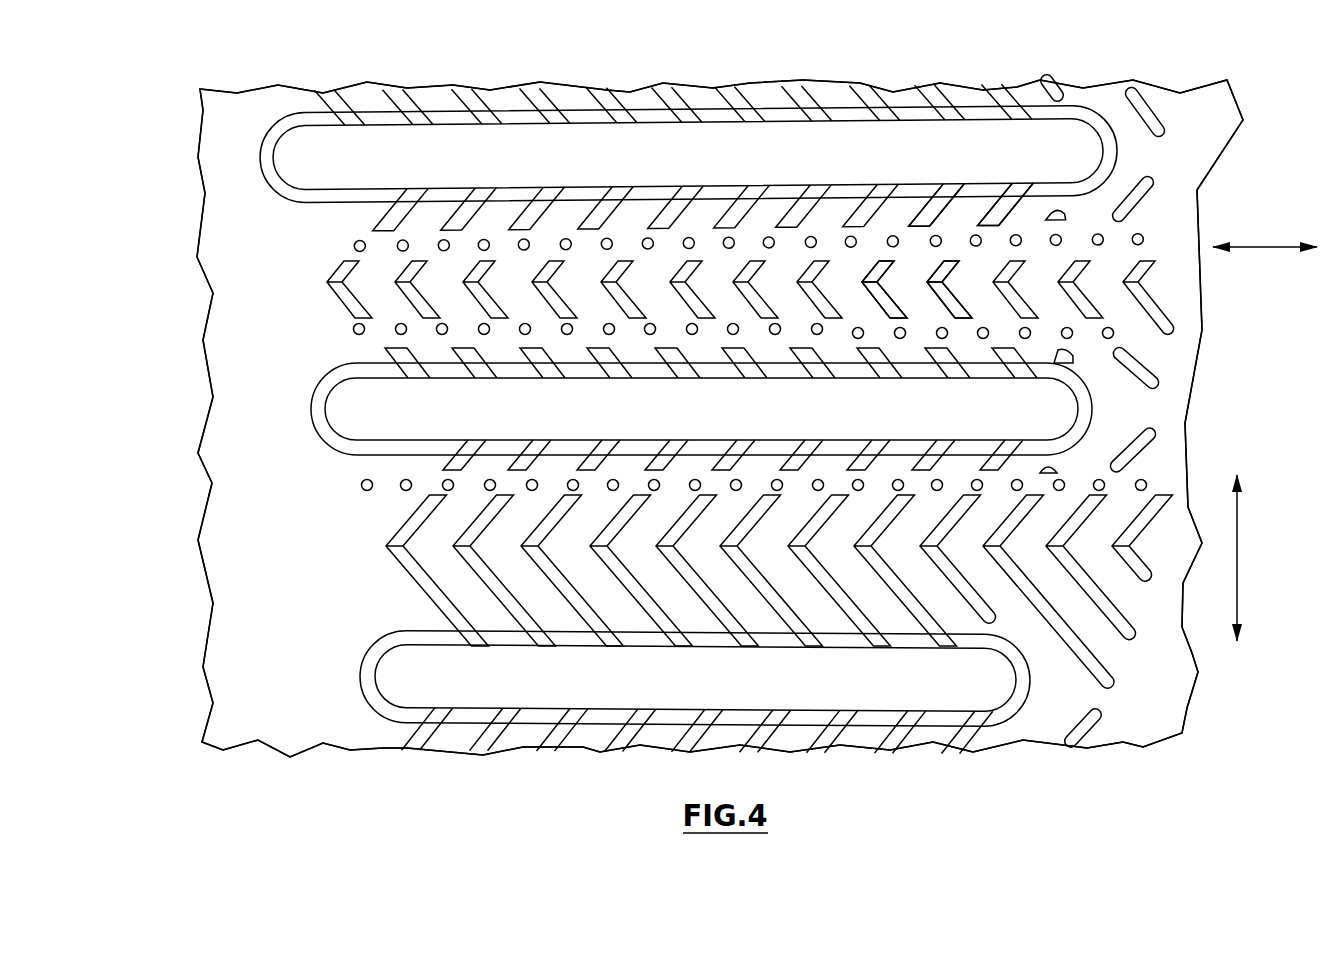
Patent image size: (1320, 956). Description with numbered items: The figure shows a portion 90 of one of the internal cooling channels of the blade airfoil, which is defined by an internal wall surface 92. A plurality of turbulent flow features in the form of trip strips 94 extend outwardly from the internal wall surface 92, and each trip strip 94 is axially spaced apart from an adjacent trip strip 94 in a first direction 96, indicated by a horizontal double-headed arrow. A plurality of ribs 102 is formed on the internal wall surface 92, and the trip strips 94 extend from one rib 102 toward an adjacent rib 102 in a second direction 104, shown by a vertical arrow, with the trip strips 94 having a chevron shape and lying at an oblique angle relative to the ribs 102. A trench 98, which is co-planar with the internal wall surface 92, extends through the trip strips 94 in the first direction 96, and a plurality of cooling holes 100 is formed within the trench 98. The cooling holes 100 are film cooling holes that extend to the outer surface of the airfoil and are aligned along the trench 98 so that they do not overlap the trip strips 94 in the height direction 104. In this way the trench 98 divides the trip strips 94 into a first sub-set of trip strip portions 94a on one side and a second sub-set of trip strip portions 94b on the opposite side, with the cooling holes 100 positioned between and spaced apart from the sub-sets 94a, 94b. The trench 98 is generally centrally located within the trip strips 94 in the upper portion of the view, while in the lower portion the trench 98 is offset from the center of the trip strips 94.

The portion of internal cooling channel 90 is at (140, 105).
The internal wall surface 92 is at (320, 234).
The trip strips 94 is at (573, 187).
The first sub-set of trip strip portions 94a is at (947, 207).
The second sub-set of trip strip portions 94b is at (933, 266).
The first direction 96 is at (1255, 247).
The trench 98 is at (385, 252).
The cooling holes 100 is at (647, 235).
The ribs 102 is at (805, 164).
The second direction 104 is at (1237, 563).